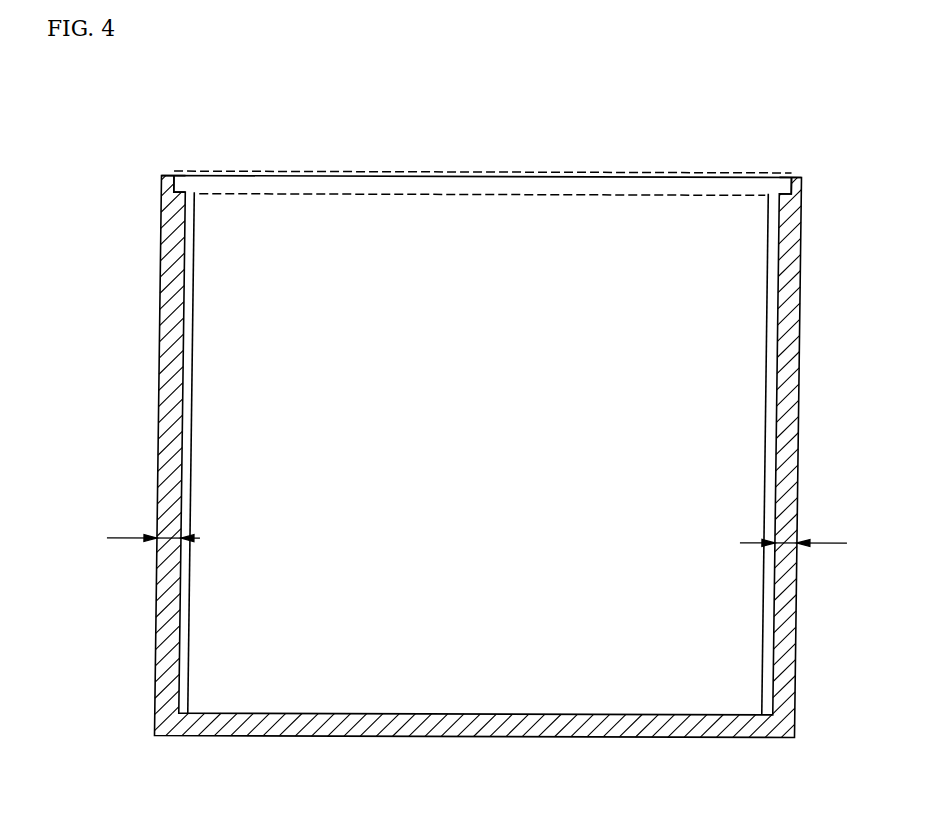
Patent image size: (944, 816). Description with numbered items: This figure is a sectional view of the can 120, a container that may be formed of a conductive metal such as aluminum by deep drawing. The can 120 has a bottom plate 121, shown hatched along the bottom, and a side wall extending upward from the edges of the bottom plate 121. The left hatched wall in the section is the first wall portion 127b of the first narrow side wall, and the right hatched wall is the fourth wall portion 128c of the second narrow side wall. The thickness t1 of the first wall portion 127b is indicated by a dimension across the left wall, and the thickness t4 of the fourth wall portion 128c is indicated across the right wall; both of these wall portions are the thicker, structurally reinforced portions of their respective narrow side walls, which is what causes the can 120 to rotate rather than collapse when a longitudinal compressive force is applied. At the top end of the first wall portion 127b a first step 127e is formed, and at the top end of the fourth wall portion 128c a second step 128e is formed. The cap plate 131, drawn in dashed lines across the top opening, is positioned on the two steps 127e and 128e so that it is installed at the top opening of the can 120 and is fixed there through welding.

The can 120 is at (477, 436).
The bottom plate 121 is at (507, 731).
The first wall portion 127b is at (164, 355).
The first step 127e is at (172, 191).
The fourth wall portion 128c is at (797, 358).
The second step 128e is at (780, 194).
The cap plate 131 is at (474, 172).
The thickness of first wall portion t1 is at (153, 529).
The thickness of fourth wall portion t4 is at (793, 533).